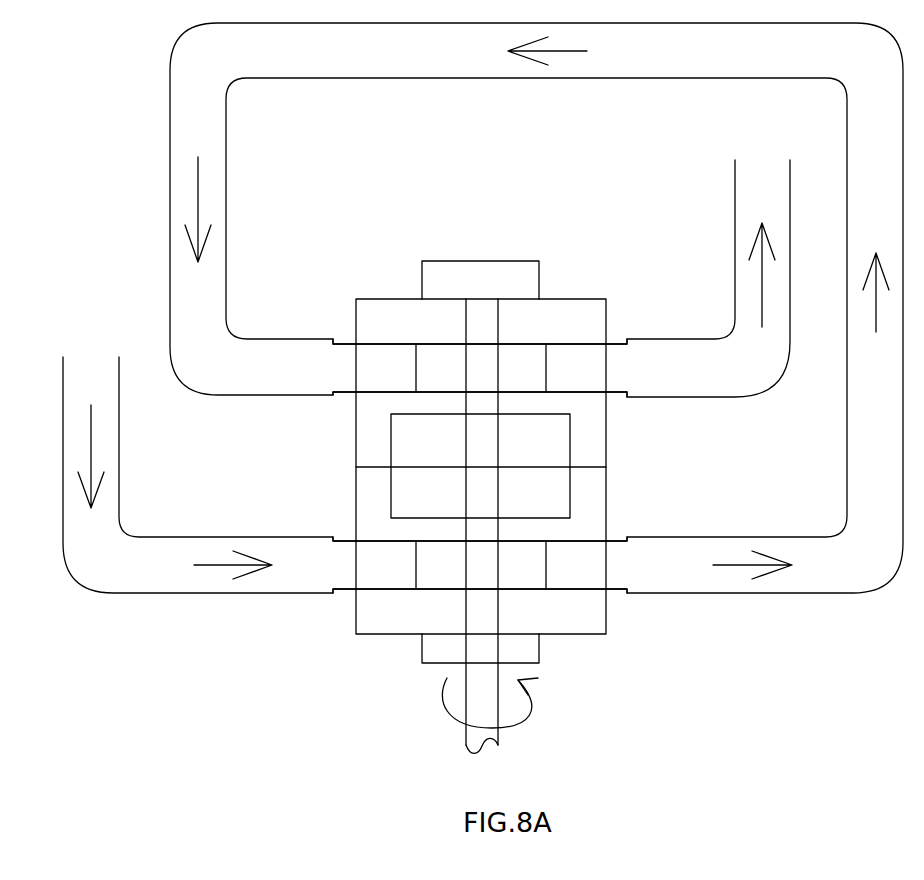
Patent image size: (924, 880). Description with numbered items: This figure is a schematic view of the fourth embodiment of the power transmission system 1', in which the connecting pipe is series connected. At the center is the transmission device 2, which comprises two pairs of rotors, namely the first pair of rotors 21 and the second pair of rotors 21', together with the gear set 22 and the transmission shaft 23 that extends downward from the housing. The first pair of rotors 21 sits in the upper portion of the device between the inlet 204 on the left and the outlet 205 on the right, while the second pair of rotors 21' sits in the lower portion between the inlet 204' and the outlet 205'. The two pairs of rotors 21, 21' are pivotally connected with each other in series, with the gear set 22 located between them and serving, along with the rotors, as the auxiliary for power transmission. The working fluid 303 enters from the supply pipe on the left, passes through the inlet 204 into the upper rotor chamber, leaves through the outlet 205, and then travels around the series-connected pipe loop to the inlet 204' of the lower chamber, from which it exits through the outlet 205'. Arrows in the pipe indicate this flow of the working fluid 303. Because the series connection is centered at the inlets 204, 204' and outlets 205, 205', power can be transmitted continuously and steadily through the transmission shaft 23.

The power transmission system 1' is at (524, 444).
The transmission device 2 is at (503, 514).
The first pair of rotors 21 is at (476, 324).
The second pair of rotors 21' is at (496, 621).
The gear set 22 is at (552, 492).
The transmission shaft 23 is at (490, 742).
The inlet 204 is at (308, 398).
The outlet 205 is at (653, 398).
The inlet 204' is at (303, 595).
The outlet 205' is at (656, 597).
The working fluid 303 is at (94, 373).